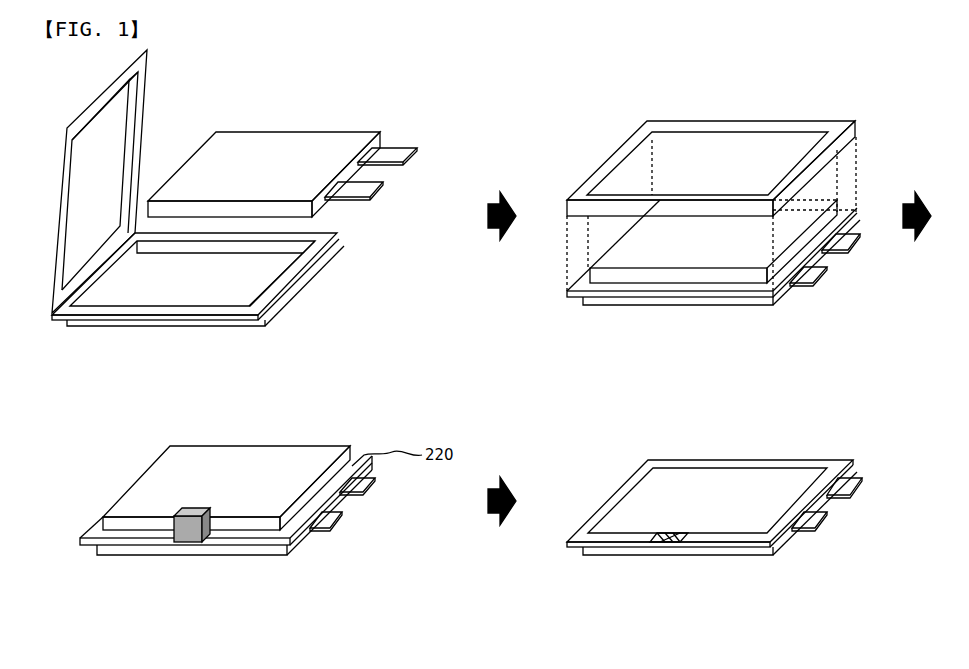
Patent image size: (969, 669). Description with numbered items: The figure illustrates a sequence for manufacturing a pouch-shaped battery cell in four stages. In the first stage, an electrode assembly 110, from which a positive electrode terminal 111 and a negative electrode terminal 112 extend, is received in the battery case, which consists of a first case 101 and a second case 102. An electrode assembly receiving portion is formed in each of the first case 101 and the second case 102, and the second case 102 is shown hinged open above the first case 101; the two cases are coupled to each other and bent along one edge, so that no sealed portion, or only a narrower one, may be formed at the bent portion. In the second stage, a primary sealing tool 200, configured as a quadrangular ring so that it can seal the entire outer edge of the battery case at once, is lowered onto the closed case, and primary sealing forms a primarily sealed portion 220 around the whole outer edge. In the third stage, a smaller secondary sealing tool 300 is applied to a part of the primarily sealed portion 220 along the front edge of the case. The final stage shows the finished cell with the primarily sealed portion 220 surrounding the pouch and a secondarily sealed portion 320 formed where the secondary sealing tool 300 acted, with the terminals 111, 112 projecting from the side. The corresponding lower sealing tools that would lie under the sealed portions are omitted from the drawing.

The first case 101 is at (102, 326).
The second case 102 is at (52, 295).
The electrode assembly 110 is at (335, 132).
The positive electrode terminal 111 is at (384, 187).
The negative electrode terminal 112 is at (418, 152).
The primary sealing tool 200 is at (678, 124).
The primarily sealed portion 220 is at (693, 463).
The secondary sealing tool 300 is at (188, 534).
The secondarily sealed portion 320 is at (648, 544).